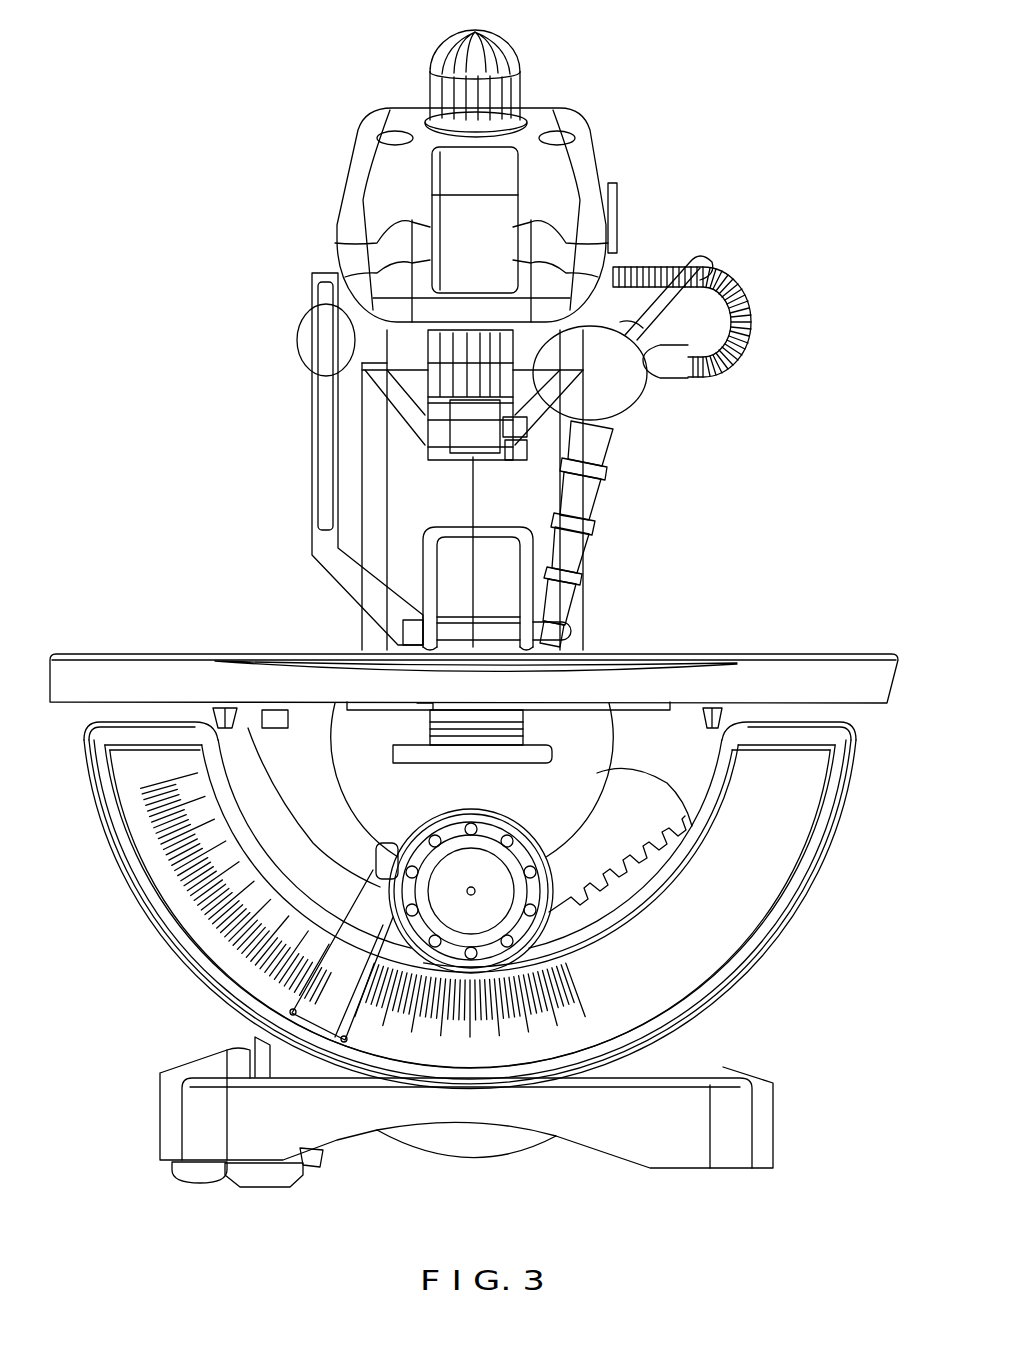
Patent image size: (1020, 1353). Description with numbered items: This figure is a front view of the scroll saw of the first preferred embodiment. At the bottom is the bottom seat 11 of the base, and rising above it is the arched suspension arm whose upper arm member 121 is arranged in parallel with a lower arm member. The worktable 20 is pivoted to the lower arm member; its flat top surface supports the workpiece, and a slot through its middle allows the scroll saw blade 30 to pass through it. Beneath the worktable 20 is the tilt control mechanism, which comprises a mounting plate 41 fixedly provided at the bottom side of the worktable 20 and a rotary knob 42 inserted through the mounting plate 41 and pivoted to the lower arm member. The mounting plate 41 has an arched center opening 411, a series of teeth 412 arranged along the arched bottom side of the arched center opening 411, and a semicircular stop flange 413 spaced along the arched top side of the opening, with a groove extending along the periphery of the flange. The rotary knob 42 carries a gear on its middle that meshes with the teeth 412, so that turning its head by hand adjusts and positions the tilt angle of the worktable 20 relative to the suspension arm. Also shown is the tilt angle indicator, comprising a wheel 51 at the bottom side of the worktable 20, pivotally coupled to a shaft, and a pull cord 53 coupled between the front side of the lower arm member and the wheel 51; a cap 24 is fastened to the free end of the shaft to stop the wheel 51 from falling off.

The bottom seat 11 is at (735, 1117).
The worktable 20 is at (808, 672).
The cap 24 is at (395, 748).
The scroll saw blade 30 is at (468, 493).
The mounting plate 41 is at (787, 851).
The arched center opening 411 is at (645, 800).
The teeth 412 is at (627, 890).
The semicircular stop flange 413 is at (572, 762).
The rotary knob 42 is at (475, 923).
The wheel 51 is at (362, 703).
The pull cord 53 is at (522, 722).
The upper arm member 121 is at (583, 128).